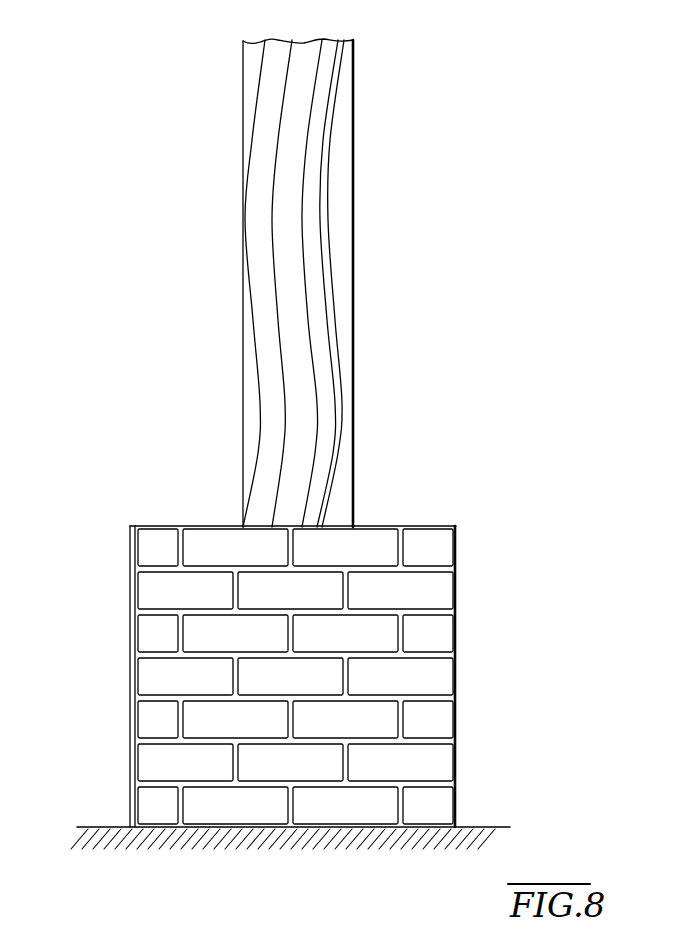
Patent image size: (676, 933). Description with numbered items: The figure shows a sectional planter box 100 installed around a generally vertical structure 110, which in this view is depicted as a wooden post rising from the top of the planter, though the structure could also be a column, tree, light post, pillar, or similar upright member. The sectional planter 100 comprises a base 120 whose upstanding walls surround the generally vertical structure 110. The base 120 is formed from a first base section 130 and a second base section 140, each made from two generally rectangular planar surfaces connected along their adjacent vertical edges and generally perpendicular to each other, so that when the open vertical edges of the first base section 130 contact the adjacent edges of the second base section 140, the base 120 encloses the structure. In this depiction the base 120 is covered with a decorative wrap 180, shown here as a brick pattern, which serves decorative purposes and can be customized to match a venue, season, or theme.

The sectional planter box 100 is at (290, 642).
The generally vertical structure 110 is at (277, 143).
The base 120 is at (128, 526).
The first base section 130 is at (133, 602).
The second base section 140 is at (442, 773).
The decorative wrap 180 is at (440, 746).